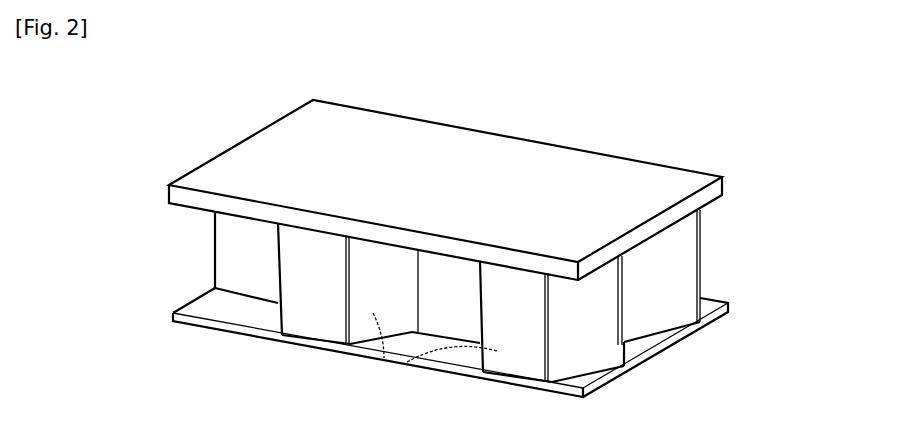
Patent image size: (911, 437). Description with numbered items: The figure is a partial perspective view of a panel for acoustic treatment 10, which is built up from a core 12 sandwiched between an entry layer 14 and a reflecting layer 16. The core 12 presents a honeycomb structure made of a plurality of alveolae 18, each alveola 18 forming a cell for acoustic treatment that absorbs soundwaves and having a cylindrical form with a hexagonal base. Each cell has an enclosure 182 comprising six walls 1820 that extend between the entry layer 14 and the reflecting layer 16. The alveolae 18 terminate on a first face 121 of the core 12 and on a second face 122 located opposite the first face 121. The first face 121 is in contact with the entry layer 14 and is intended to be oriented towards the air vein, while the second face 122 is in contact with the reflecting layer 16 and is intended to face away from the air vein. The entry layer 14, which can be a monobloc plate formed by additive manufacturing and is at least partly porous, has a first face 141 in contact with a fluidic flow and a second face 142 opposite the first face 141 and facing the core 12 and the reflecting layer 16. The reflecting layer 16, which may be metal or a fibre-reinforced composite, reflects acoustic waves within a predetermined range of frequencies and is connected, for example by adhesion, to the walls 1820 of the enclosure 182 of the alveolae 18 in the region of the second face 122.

The panel for acoustic treatment 10 is at (432, 248).
The core 12 is at (418, 308).
The first face of the core 121 is at (212, 282).
The second face of the core 122 is at (202, 212).
The entry layer 14 is at (432, 342).
The first face of the entry layer 141 is at (253, 342).
The second face of the entry layer 142 is at (228, 312).
The reflecting layer 16 is at (169, 196).
The alveola 18 is at (483, 334).
The enclosure 182 is at (312, 318).
The wall 1820 is at (447, 318).